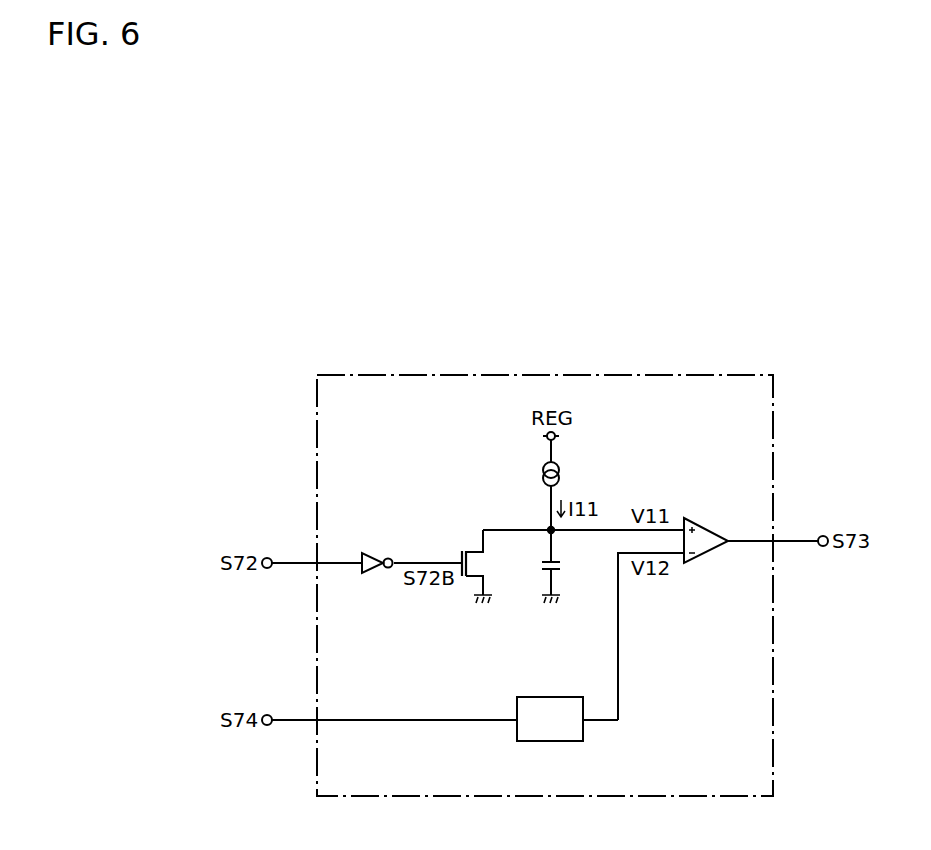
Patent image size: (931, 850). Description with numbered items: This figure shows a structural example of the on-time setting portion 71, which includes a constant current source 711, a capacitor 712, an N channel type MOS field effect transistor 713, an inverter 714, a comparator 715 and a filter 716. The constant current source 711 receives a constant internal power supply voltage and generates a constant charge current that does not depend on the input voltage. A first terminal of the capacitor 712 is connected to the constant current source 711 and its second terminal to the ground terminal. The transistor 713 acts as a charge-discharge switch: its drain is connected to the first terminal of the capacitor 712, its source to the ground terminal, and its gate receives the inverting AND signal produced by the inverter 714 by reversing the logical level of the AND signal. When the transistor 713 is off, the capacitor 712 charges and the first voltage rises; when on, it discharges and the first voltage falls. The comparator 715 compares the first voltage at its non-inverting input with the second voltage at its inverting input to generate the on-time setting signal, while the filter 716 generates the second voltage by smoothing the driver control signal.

The on-time setting portion 71 is at (551, 374).
The constant current source 711 is at (548, 474).
The capacitor 712 is at (562, 565).
The N channel type MOS field effect transistor 713 is at (486, 565).
The inverter 714 is at (383, 557).
The comparator 715 is at (709, 526).
The filter 716 is at (552, 697).